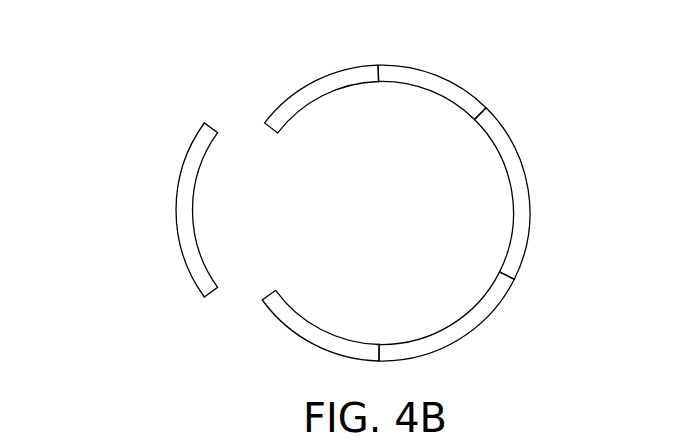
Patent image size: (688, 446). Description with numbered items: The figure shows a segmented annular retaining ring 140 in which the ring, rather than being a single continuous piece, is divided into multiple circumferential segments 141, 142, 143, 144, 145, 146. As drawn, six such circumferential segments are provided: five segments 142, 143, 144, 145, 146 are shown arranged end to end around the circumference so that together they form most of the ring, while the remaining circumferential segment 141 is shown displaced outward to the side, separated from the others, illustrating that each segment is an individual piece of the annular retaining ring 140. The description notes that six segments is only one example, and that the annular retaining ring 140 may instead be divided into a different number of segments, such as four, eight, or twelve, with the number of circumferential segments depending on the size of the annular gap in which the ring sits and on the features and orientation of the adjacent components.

The annular retaining ring 140 is at (107, 67).
The circumferential segment 141 is at (184, 210).
The circumferential segment 142 is at (316, 89).
The circumferential segment 143 is at (419, 70).
The circumferential segment 144 is at (521, 211).
The circumferential segment 145 is at (465, 329).
The circumferential segment 146 is at (305, 328).